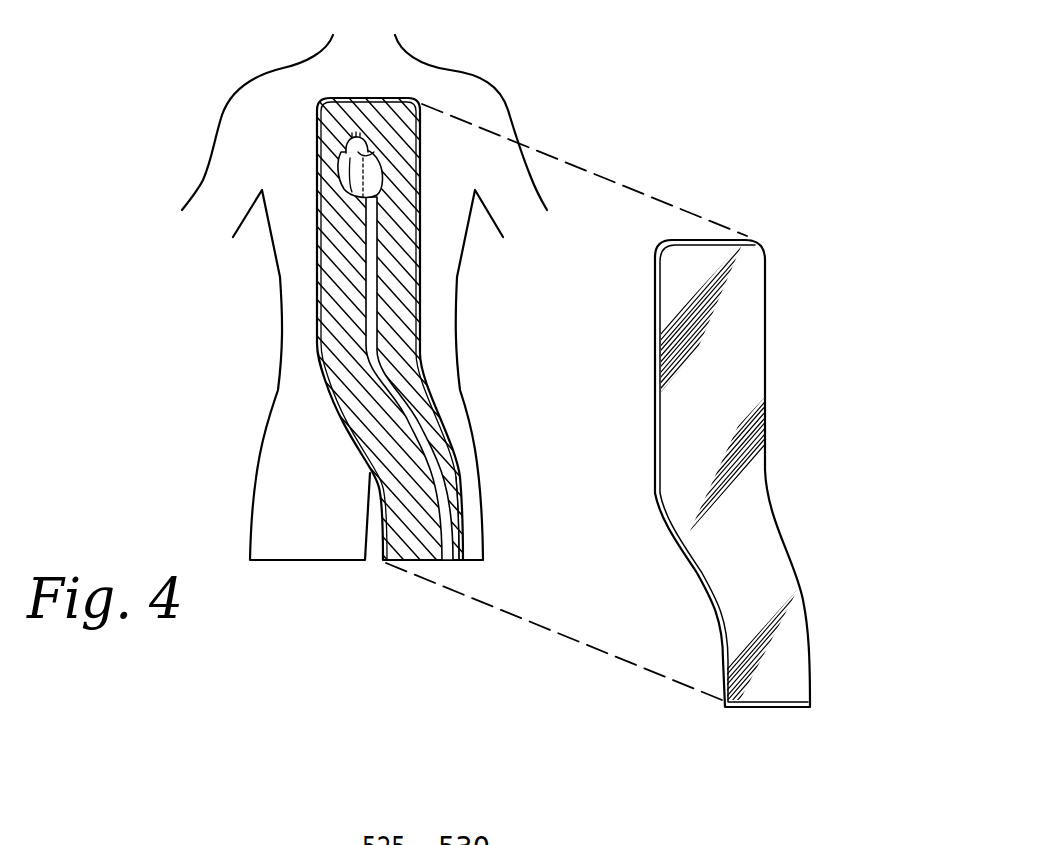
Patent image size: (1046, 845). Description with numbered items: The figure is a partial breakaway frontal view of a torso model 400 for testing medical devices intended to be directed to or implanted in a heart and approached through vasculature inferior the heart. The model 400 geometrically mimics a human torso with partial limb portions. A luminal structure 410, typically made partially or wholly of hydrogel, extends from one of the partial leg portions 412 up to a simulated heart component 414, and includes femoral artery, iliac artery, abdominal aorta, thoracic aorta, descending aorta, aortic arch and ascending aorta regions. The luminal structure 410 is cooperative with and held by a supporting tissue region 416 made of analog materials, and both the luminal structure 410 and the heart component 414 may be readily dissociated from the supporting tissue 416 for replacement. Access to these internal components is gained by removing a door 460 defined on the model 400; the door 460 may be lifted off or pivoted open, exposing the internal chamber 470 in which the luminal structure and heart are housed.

The model 400 is at (152, 58).
The luminal structure 410 is at (383, 358).
The partial leg portion 412 is at (458, 503).
The simulated heart component 414 is at (347, 193).
The supporting tissue region 416 is at (402, 290).
The door 460 is at (753, 380).
The internal chamber 470 is at (403, 98).